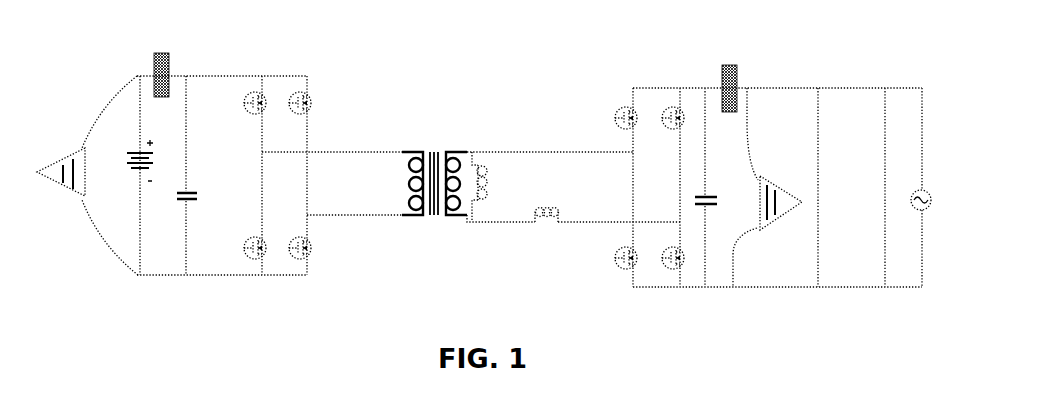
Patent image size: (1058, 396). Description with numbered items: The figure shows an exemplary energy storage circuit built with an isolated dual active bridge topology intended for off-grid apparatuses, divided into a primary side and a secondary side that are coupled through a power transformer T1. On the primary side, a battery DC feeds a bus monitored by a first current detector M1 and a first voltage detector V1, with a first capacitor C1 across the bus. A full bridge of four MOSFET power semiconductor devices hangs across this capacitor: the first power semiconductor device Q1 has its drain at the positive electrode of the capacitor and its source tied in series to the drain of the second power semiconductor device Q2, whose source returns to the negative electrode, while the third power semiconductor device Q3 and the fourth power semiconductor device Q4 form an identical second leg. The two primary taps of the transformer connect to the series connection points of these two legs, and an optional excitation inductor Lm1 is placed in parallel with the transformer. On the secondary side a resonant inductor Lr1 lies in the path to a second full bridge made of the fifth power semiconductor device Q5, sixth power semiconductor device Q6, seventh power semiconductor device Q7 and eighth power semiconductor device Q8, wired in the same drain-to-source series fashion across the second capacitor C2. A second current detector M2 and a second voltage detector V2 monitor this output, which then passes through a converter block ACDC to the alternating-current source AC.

The first current detector M1 is at (166, 53).
The second current detector M2 is at (722, 59).
The first voltage detector V1 is at (79, 187).
The second voltage detector V2 is at (773, 187).
The first power semiconductor device Q1 is at (239, 103).
The second power semiconductor device Q2 is at (239, 248).
The third power semiconductor device Q3 is at (315, 103).
The fourth power semiconductor device Q4 is at (315, 248).
The fifth power semiconductor device Q5 is at (613, 118).
The sixth power semiconductor device Q6 is at (613, 258).
The seventh power semiconductor device Q7 is at (667, 131).
The eighth power semiconductor device Q8 is at (667, 248).
The first capacitor C1 is at (200, 199).
The second capacitor C2 is at (717, 201).
The transformer T1 is at (434, 166).
The excitation inductor Lm1 is at (500, 182).
The resonant inductor Lr1 is at (558, 205).
The DC battery DC is at (119, 171).
The AC/DC converter ACDC is at (843, 195).
The AC source AC is at (911, 211).